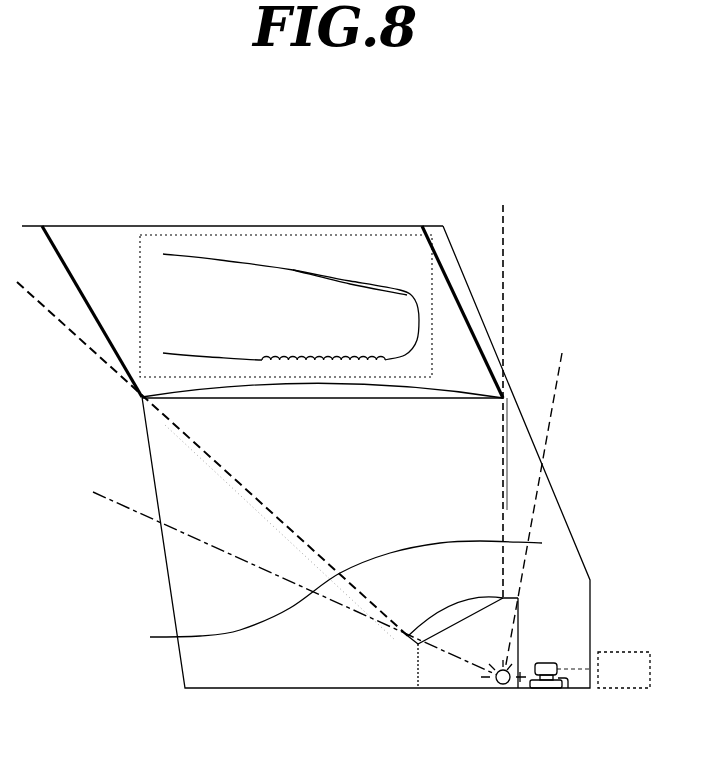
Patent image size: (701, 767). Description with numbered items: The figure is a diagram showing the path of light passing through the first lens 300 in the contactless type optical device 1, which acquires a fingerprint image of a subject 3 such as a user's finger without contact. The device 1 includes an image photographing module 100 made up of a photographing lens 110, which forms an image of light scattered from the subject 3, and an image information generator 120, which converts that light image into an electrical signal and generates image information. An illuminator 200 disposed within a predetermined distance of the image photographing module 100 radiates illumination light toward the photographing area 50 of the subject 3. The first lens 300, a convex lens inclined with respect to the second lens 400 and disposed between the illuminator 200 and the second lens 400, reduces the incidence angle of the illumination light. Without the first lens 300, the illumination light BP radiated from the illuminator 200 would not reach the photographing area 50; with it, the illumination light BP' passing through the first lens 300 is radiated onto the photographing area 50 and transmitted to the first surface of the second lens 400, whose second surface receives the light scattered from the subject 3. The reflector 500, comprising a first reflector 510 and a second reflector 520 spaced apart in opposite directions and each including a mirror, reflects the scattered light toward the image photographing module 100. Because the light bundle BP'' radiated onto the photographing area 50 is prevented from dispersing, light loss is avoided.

The contactless type optical device 1 is at (272, 179).
The subject 3 is at (293, 270).
The photographing area 50 is at (140, 258).
The second lens 400 is at (349, 400).
The reflector 500 is at (78, 573).
The first reflector 510 is at (255, 515).
The second reflector 520 is at (319, 596).
The first lens 300 is at (408, 636).
The illuminator 200 is at (503, 684).
The image photographing module 100 is at (565, 688).
The photographing lens 110 is at (552, 663).
The image information generator 120 is at (622, 688).
The illumination light BP is at (295, 583).
The illumination light passing through the first lens BP' is at (327, 511).
The light bundle BP'' is at (212, 461).